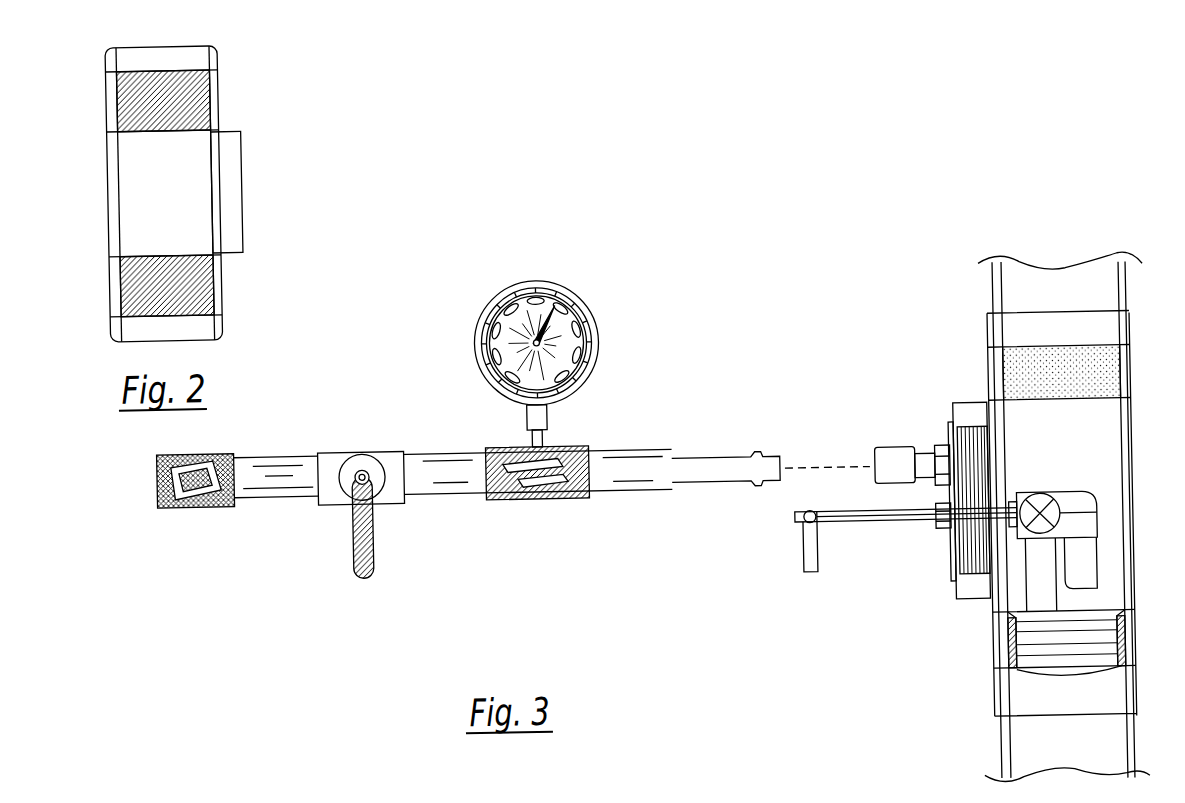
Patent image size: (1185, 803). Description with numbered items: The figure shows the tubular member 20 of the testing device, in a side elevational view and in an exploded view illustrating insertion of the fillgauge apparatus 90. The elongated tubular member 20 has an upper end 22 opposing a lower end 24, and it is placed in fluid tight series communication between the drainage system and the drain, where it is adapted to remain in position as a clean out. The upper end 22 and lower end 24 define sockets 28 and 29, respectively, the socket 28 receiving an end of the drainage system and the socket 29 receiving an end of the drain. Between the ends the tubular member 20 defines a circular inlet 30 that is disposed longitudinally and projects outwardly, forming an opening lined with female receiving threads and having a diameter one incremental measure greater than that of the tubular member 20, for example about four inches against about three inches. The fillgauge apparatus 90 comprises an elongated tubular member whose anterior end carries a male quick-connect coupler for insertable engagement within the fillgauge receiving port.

In FIG. 2, the tubular member 20 is at (103, 140).
In FIG. 2, the upper end 22 is at (215, 50).
In FIG. 2, the lower end 24 is at (212, 342).
In FIG. 2, the circular inlet 30 is at (241, 163).
In FIG. 3, the fillgauge apparatus 90 is at (366, 403).
In FIG. 3, the socket 28 is at (993, 341).
In FIG. 3, the socket 29 is at (990, 685).